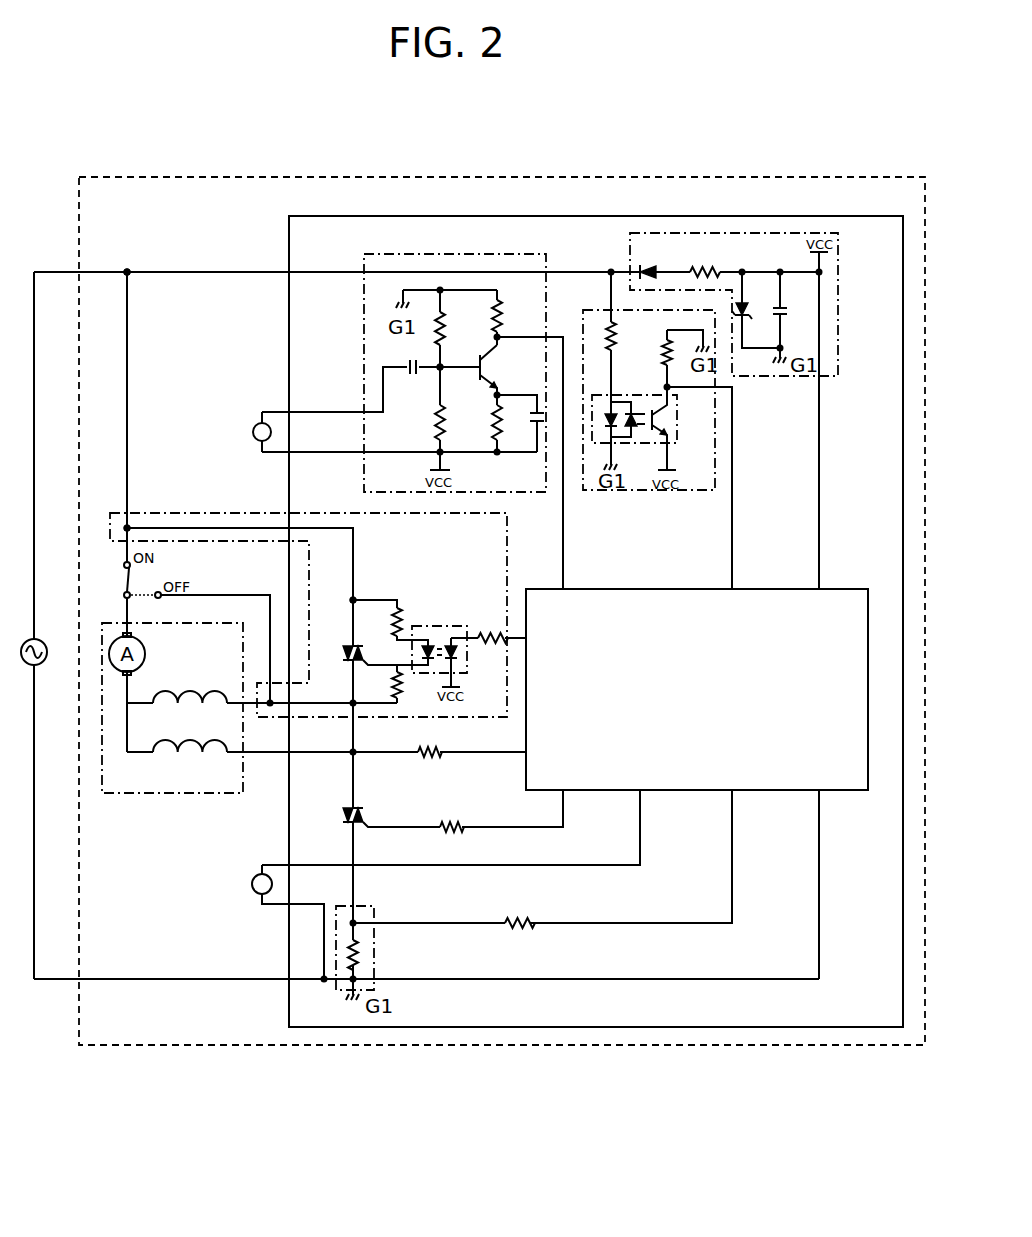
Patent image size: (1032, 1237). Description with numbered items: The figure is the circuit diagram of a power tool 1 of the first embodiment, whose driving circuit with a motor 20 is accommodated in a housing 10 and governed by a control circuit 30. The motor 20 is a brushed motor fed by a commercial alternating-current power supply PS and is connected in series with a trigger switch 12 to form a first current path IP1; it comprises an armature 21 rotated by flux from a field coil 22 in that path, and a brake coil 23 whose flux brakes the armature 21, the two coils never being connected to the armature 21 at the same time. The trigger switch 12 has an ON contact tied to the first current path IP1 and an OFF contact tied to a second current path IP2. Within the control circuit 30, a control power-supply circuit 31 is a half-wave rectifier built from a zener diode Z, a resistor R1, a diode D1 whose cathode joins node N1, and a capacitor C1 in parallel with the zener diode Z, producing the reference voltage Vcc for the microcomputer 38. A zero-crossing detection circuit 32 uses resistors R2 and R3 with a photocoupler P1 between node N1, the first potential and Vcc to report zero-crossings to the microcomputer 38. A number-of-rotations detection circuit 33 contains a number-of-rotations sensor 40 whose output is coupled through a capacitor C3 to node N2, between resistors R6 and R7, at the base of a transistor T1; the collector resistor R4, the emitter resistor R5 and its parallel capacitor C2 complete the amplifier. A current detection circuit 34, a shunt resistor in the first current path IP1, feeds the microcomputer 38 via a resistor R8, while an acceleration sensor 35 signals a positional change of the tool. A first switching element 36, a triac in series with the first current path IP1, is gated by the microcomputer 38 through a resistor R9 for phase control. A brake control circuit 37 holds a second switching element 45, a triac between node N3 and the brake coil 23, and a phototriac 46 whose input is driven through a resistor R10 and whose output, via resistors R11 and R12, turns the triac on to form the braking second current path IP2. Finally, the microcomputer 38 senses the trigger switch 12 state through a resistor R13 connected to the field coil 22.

The power tool 1 is at (639, 164).
The housing 10 is at (796, 150).
The trigger switch 12 is at (125, 586).
The motor 20 is at (200, 797).
The armature 21 is at (148, 657).
The field coil 22 is at (187, 758).
The brake coil 23 is at (190, 678).
The control circuit 30 is at (840, 216).
The control power-supply circuit 31 is at (838, 311).
The zero-crossing detection circuit 32 is at (615, 490).
The number-of-rotations detection circuit 33 is at (393, 253).
The current detection circuit 34 is at (368, 945).
The acceleration sensor 35 is at (255, 880).
The first switching element 36 is at (369, 814).
The brake control circuit 37 is at (190, 511).
The microcomputer 38 is at (668, 589).
The number-of-rotations sensor 40 is at (254, 426).
The second switching element 45 is at (347, 644).
The phototriac 46 is at (447, 626).
The power supply PS is at (37, 635).
The first current path IP1 is at (107, 272).
The second current path IP2 is at (355, 587).
The node N1 is at (128, 280).
The node N2 is at (456, 379).
The node N3 is at (130, 525).
The transistor T1 is at (504, 369).
The photocoupler P1 is at (650, 419).
The diode D1 is at (650, 262).
The zener diode Z is at (748, 314).
The capacitor C1 is at (794, 314).
The capacitor C2 is at (535, 435).
The capacitor C3 is at (409, 379).
The resistor R1 is at (705, 261).
The resistor R2 is at (626, 337).
The resistor R3 is at (654, 354).
The resistor R4 is at (512, 316).
The resistor R5 is at (483, 422).
The resistor R6 is at (455, 328).
The resistor R7 is at (424, 422).
The resistor R8 is at (525, 922).
The resistor R9 is at (450, 837).
The resistor R10 is at (489, 650).
The resistor R11 is at (417, 615).
The resistor R12 is at (403, 690).
The resistor R13 is at (437, 760).